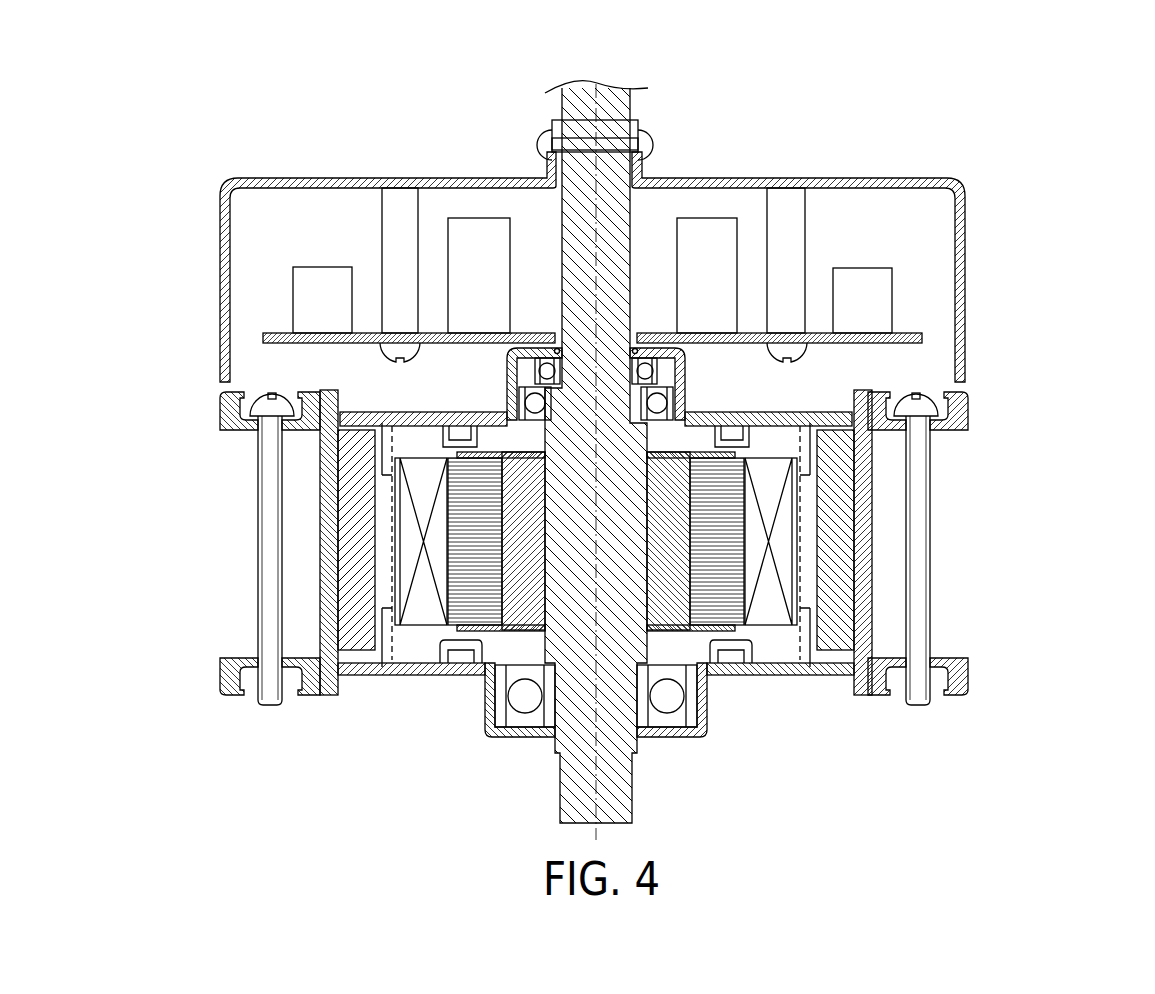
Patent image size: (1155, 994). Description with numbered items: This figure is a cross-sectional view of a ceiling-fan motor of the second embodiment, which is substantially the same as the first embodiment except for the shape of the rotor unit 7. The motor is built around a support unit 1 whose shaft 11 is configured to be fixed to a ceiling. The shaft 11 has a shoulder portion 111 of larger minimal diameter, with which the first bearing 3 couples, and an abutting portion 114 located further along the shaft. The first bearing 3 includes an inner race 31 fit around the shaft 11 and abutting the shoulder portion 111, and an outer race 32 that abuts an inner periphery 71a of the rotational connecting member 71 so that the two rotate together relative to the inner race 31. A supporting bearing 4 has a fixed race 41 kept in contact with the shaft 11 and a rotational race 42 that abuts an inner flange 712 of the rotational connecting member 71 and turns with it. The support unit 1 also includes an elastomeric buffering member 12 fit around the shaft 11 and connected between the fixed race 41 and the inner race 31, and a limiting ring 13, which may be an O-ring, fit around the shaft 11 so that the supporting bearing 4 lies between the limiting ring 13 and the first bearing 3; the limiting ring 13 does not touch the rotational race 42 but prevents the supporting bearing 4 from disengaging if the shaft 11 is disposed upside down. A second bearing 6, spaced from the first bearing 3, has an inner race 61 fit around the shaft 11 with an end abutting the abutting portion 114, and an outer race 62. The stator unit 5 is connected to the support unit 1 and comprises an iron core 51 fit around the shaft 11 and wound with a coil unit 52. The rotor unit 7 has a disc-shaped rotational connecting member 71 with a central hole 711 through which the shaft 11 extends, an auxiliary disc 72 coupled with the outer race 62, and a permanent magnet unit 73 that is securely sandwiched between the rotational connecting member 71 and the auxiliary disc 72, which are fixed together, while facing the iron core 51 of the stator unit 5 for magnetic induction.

The support unit 1 is at (652, 203).
The shaft 11 is at (617, 743).
The shoulder portion 111 is at (543, 427).
The abutting portion 114 is at (478, 652).
The buffering member 12 is at (640, 372).
The limiting ring 13 is at (553, 140).
The first bearing 3 is at (516, 300).
The inner race 31 is at (527, 413).
The outer race 32 is at (517, 403).
The supporting bearing 4 is at (536, 243).
The fixed race 41 is at (522, 398).
The rotational race 42 is at (541, 371).
The stator unit 5 is at (657, 595).
The iron core 51 is at (797, 600).
The coil unit 52 is at (770, 620).
The second bearing 6 is at (542, 751).
The inner race 61 is at (543, 720).
The outer race 62 is at (500, 717).
The rotor unit 7 is at (673, 547).
The rotational connecting member 71 is at (968, 410).
The inner periphery 71a is at (510, 378).
The central hole 711 is at (637, 349).
The inner flange 712 is at (548, 352).
The auxiliary disc 72 is at (652, 631).
The permanent magnet unit 73 is at (830, 545).